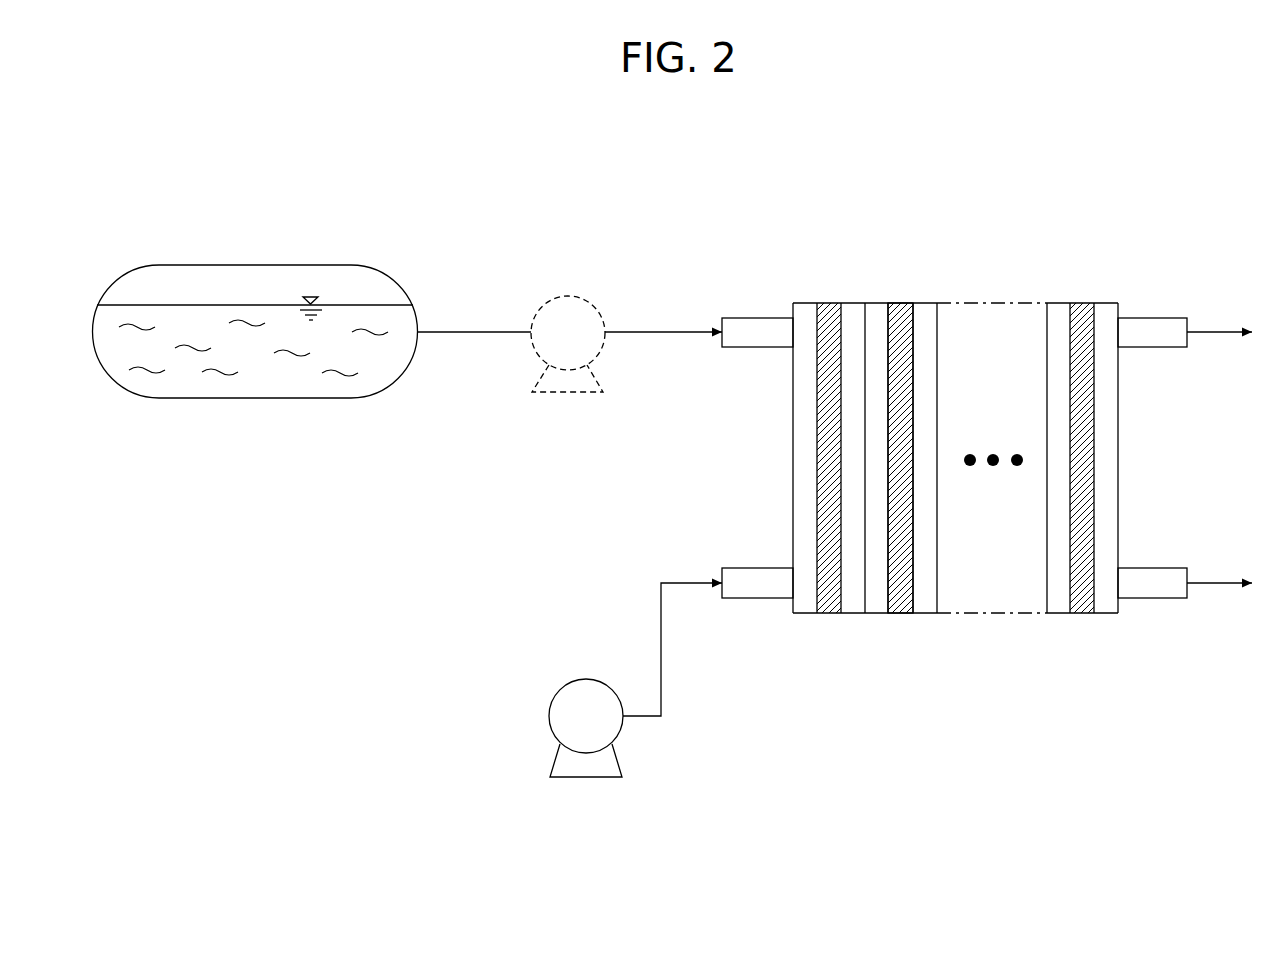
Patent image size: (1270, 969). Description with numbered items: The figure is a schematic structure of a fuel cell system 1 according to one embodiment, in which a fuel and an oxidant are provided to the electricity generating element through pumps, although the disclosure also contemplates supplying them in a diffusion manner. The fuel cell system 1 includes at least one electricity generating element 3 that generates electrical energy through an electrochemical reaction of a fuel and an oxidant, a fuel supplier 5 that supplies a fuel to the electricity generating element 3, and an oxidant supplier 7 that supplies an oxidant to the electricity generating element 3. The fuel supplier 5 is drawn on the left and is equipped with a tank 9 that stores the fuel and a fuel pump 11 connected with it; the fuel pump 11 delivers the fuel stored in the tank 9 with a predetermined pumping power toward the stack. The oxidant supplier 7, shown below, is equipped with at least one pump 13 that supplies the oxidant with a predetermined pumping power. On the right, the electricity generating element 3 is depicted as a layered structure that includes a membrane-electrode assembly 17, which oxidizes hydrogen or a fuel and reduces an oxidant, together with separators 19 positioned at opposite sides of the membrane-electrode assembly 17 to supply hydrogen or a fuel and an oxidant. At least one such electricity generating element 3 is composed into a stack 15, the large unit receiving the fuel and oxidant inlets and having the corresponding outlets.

The fuel cell system 1 is at (1133, 176).
The electricity generating element 3 is at (838, 686).
The fuel supplier 5 is at (127, 242).
The oxidant supplier 7 is at (527, 740).
The tank 9 is at (278, 265).
The fuel pump 11 is at (568, 296).
The pump 13 is at (550, 703).
The stack 15 is at (1027, 283).
The membrane-electrode assembly 17 is at (900, 606).
The separator 19 is at (875, 606).